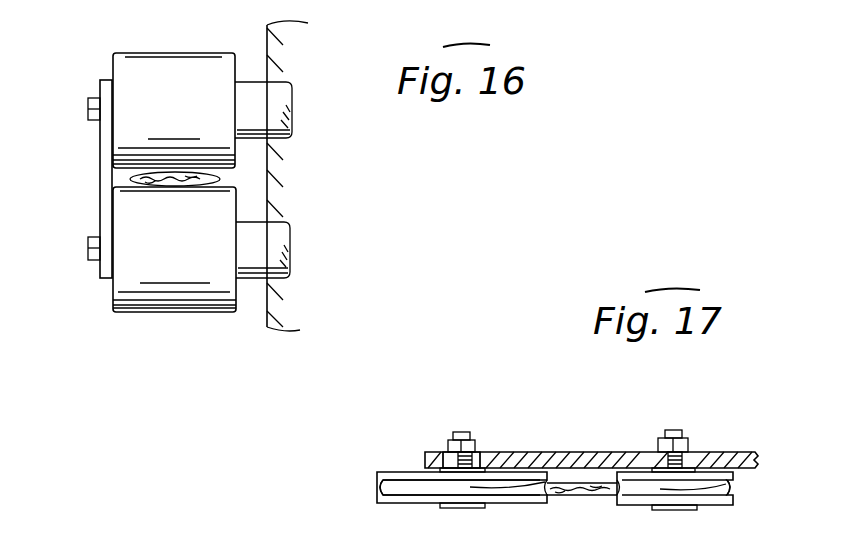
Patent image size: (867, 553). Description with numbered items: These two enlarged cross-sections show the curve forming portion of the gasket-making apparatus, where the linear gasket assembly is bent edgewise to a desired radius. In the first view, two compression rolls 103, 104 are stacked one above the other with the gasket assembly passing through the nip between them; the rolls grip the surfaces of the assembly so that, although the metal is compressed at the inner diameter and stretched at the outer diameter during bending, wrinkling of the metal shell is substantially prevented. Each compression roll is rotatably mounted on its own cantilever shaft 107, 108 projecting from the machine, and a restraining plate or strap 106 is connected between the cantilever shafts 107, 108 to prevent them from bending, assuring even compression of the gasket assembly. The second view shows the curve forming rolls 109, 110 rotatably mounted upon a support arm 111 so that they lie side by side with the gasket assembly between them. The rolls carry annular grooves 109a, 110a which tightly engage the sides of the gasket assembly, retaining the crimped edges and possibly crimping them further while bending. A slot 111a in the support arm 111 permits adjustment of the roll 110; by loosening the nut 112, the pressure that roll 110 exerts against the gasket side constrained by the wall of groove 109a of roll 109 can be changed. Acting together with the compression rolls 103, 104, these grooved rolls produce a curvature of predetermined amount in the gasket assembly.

In FIG. 16, the compression roll 103 is at (152, 63).
In FIG. 16, the compression roll 104 is at (163, 300).
In FIG. 16, the restraining plate or strap 106 is at (100, 208).
In FIG. 16, the cantilever shaft 107 is at (265, 106).
In FIG. 16, the cantilever shaft 108 is at (263, 242).
In FIG. 17, the curve forming roll 109 is at (642, 505).
In FIG. 17, the annular groove 109a is at (725, 487).
In FIG. 17, the curve forming roll 110 is at (420, 512).
In FIG. 17, the annular groove 110a is at (380, 487).
In FIG. 17, the support arm 111 is at (728, 452).
In FIG. 17, the slot 111a is at (480, 463).
In FIG. 17, the nut 112 is at (452, 443).